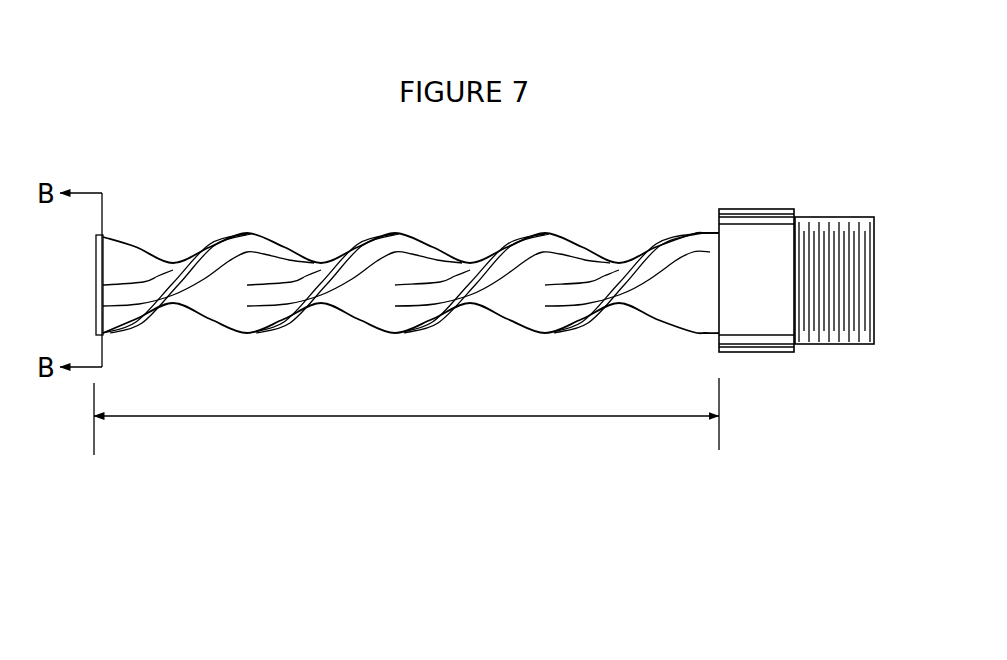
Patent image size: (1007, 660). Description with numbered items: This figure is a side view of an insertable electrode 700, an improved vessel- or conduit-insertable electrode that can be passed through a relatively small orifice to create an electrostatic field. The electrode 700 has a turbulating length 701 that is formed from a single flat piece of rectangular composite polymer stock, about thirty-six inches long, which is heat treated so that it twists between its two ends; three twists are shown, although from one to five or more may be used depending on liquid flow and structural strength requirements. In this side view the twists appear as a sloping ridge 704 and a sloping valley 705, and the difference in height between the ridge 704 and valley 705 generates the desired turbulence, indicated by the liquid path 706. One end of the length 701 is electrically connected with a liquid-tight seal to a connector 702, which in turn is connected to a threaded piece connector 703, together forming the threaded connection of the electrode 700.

The insertable electrode 700 is at (263, 145).
The turbulating length 701 is at (406, 419).
The connector 702 is at (763, 207).
The threaded piece connector 703 is at (842, 214).
The sloping ridge 704 is at (234, 232).
The sloping valley 705 is at (318, 256).
The liquid path 706 is at (303, 380).